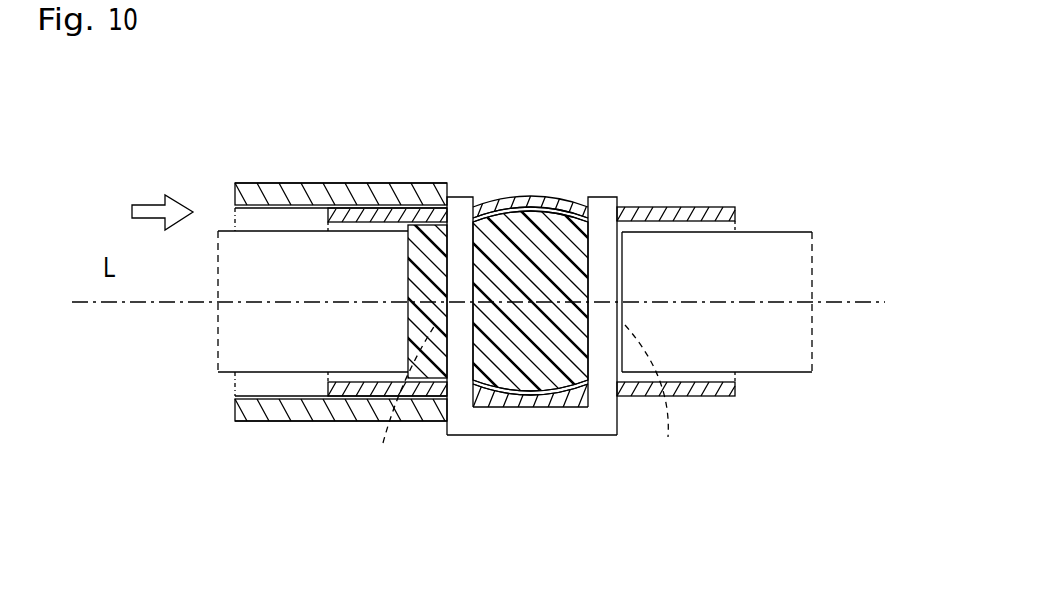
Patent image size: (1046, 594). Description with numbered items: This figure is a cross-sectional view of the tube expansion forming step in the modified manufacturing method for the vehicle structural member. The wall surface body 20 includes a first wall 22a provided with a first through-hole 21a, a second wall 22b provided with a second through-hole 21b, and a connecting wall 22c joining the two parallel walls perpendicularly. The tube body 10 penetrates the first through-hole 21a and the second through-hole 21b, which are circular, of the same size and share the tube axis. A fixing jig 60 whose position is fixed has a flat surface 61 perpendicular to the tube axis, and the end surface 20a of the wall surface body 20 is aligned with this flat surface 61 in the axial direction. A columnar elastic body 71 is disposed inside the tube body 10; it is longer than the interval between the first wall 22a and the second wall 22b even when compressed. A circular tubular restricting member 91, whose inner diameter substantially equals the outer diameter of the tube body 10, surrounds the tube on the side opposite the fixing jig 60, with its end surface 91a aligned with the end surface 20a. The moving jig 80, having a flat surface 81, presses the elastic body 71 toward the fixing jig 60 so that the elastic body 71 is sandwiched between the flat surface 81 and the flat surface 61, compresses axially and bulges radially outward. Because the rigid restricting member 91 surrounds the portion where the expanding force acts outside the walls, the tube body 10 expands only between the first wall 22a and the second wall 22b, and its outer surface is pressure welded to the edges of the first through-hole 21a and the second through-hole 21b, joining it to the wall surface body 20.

The tube body 10 is at (352, 205).
The wall surface body 20 is at (605, 197).
The end surface 20a is at (447, 412).
The first through-hole 21a is at (382, 398).
The second through-hole 21b is at (665, 402).
The first wall 22a is at (447, 425).
The second wall 22b is at (618, 417).
The connecting wall 22c is at (530, 435).
The fixing jig 60 is at (790, 232).
The flat surface 61 is at (585, 215).
The elastic body 71 is at (510, 228).
The moving jig 80 is at (219, 372).
The flat surface 81 is at (382, 215).
The restricting member 91 is at (235, 183).
The end surface 91a is at (443, 210).